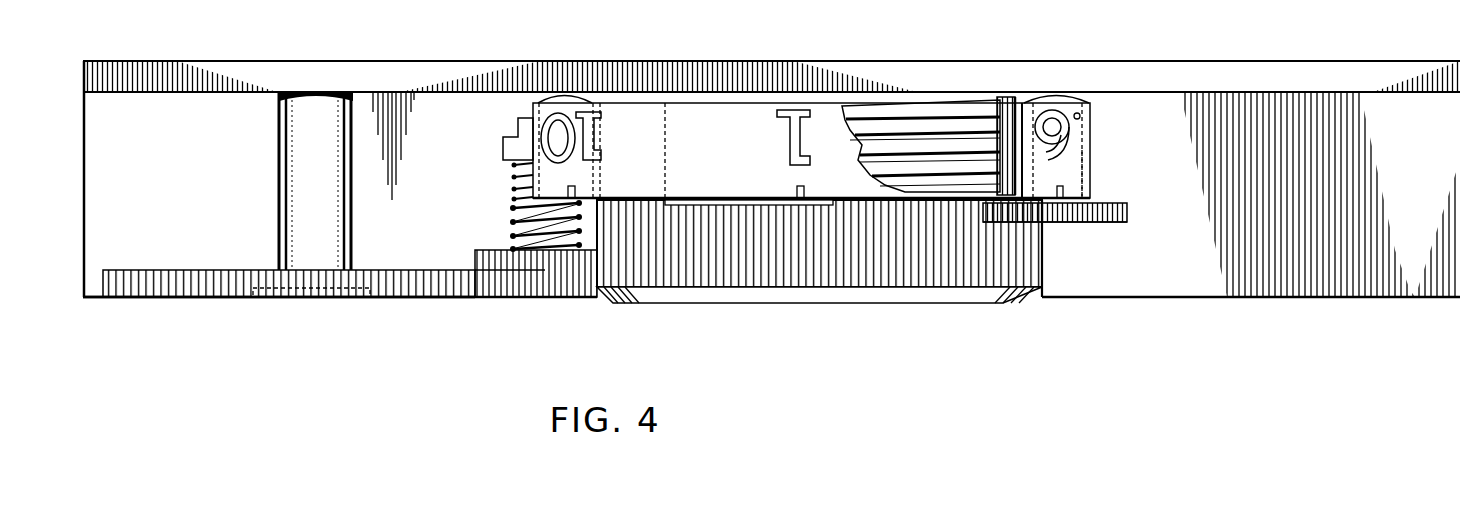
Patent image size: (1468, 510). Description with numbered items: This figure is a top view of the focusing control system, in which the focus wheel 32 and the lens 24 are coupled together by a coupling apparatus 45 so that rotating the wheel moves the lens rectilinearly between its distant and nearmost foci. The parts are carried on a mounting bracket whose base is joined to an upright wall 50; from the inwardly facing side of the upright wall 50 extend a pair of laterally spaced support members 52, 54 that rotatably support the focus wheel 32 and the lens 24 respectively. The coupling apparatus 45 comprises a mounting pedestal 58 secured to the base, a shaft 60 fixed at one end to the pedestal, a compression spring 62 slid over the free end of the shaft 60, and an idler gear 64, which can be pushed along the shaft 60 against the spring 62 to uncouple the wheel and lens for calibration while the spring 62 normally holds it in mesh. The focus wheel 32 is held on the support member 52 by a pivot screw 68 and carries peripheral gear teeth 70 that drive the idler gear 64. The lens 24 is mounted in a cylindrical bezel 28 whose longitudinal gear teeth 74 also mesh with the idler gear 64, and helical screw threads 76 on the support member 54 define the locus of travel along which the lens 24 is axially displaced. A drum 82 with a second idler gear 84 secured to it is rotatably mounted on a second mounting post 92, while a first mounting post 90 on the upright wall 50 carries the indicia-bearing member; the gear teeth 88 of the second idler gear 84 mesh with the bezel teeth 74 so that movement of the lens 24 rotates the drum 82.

The lens 24 is at (789, 312).
The cylindrical bezel 28 is at (958, 292).
The focus wheel 32 is at (150, 290).
The coupling apparatus 45 is at (552, 310).
The upright wall 50 is at (1222, 80).
The support member 52 is at (297, 202).
The support member 54 is at (1008, 100).
The mounting pedestal 58 is at (513, 148).
The shaft 60 is at (516, 191).
The compression spring 62 is at (516, 217).
The idler gear 64 is at (590, 300).
The pivot screw 68 is at (270, 297).
The gear teeth 70 is at (460, 300).
The gear teeth 74 is at (1035, 246).
The helical screw threads 76 is at (957, 110).
The drum 82 is at (1070, 102).
The second idler gear 84 is at (1127, 211).
The gear teeth 88 is at (1081, 214).
The first mounting post 90 is at (588, 94).
The second mounting post 92 is at (1085, 185).